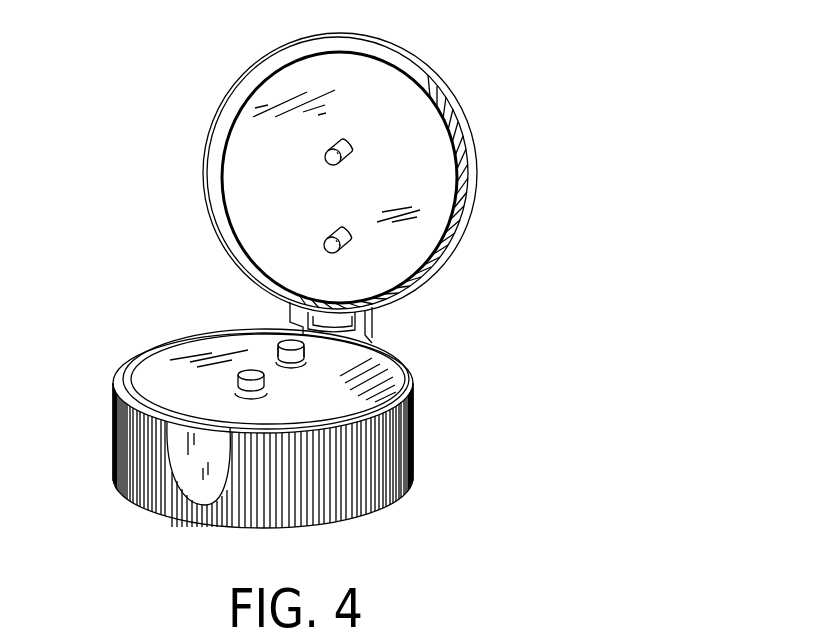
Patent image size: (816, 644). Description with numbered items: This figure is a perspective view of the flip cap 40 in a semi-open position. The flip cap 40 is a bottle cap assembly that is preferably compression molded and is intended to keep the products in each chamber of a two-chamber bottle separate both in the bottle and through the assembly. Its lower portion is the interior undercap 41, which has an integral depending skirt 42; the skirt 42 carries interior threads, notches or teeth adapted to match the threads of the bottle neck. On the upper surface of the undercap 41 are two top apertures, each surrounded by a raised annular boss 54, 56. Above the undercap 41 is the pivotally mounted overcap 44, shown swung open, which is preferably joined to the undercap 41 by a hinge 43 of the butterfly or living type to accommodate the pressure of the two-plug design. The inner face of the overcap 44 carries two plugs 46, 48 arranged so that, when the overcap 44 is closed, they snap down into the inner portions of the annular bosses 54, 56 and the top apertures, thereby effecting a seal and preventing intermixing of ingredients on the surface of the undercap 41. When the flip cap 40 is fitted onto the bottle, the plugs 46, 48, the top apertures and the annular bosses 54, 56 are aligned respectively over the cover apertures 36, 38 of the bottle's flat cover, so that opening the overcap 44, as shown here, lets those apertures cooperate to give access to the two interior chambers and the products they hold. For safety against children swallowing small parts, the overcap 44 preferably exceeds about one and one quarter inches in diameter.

The cover aperture 36 is at (287, 342).
The cover aperture 38 is at (240, 373).
The flip cap 40 is at (528, 328).
The interior undercap 41 is at (170, 382).
The depending skirt 42 is at (410, 480).
The hinge 43 is at (390, 338).
The overcap 44 is at (463, 130).
The plug 46 is at (353, 242).
The plug 48 is at (350, 157).
The annular boss 54 is at (281, 349).
The annular boss 56 is at (263, 390).